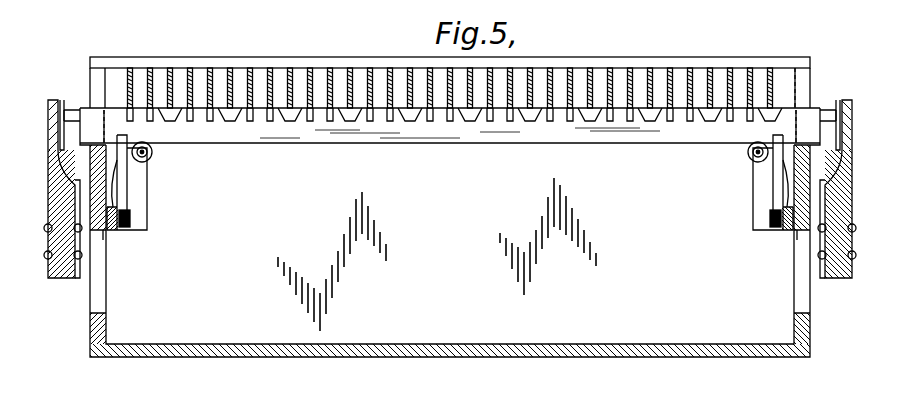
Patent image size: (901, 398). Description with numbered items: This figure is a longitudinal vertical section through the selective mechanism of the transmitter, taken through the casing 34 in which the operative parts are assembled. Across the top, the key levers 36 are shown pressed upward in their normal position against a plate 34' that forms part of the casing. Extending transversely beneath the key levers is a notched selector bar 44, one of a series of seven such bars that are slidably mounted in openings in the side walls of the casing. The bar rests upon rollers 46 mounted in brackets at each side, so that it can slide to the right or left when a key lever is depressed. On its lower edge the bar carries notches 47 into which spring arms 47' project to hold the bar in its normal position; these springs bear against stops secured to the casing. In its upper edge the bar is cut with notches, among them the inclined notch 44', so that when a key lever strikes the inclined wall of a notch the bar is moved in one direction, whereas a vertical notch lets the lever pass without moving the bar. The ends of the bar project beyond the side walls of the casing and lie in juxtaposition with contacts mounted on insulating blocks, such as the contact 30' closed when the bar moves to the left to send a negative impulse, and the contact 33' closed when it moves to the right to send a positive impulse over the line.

The contact 30' is at (851, 171).
The contact 33' is at (55, 170).
The casing 34 is at (473, 251).
The plate 34' is at (450, 86).
The key levers 36 is at (614, 80).
The notched bar 44 is at (450, 154).
The notch 44' is at (454, 144).
The rollers 46 is at (151, 159).
The notches 47 is at (450, 176).
The spring arms 47' is at (450, 192).